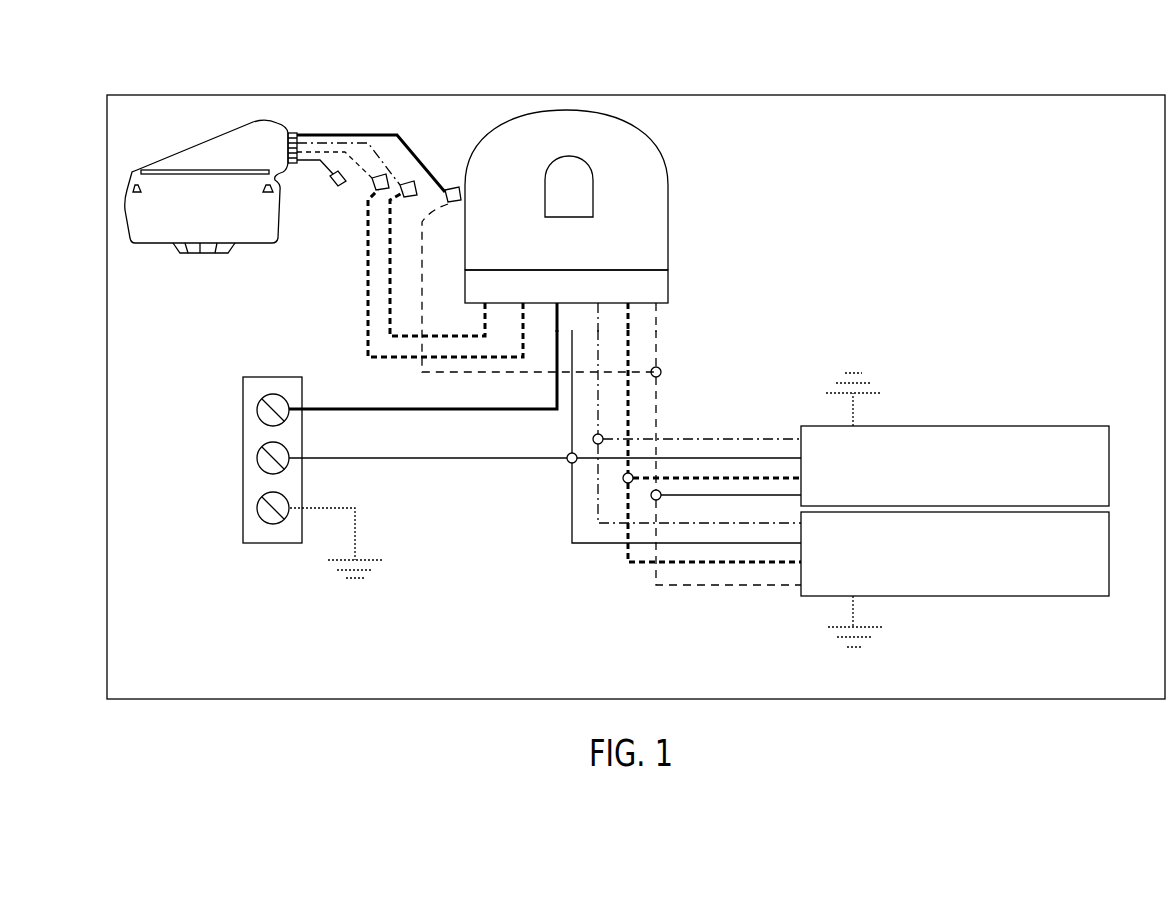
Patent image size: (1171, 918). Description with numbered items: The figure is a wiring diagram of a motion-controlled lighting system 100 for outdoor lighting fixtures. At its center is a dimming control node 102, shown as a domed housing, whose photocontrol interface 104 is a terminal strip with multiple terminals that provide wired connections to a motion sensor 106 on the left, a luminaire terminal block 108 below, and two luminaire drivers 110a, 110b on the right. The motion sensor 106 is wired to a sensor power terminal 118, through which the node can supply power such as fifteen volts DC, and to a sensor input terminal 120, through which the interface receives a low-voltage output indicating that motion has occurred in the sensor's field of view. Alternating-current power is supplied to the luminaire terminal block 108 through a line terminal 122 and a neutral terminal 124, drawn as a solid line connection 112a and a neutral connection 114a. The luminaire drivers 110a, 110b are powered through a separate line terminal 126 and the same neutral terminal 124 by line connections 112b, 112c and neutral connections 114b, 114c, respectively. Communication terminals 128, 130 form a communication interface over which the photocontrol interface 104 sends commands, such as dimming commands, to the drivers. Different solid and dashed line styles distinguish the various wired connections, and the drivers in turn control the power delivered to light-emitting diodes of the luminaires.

The motion-controlled lighting system 100 is at (150, 68).
The dimming control node 102 is at (487, 140).
The photocontrol interface 104 is at (668, 291).
The motion sensor 106 is at (168, 155).
The luminaire terminal block 108 is at (243, 390).
The luminaire driver 110a is at (1109, 466).
The luminaire driver 110b is at (1050, 597).
The line connection 112a is at (322, 406).
The line connection 112b is at (718, 438).
The line connection 112c is at (733, 525).
The neutral connection 114a is at (367, 461).
The neutral connection 114b is at (750, 455).
The neutral connection 114c is at (695, 545).
The sensor power terminal 118 is at (491, 306).
The sensor input terminal 120 is at (530, 306).
The line terminal 122 is at (558, 268).
The neutral terminal 124 is at (574, 306).
The line terminal 126 is at (600, 306).
The communication terminal 128 is at (630, 306).
The communication terminal 130 is at (660, 306).